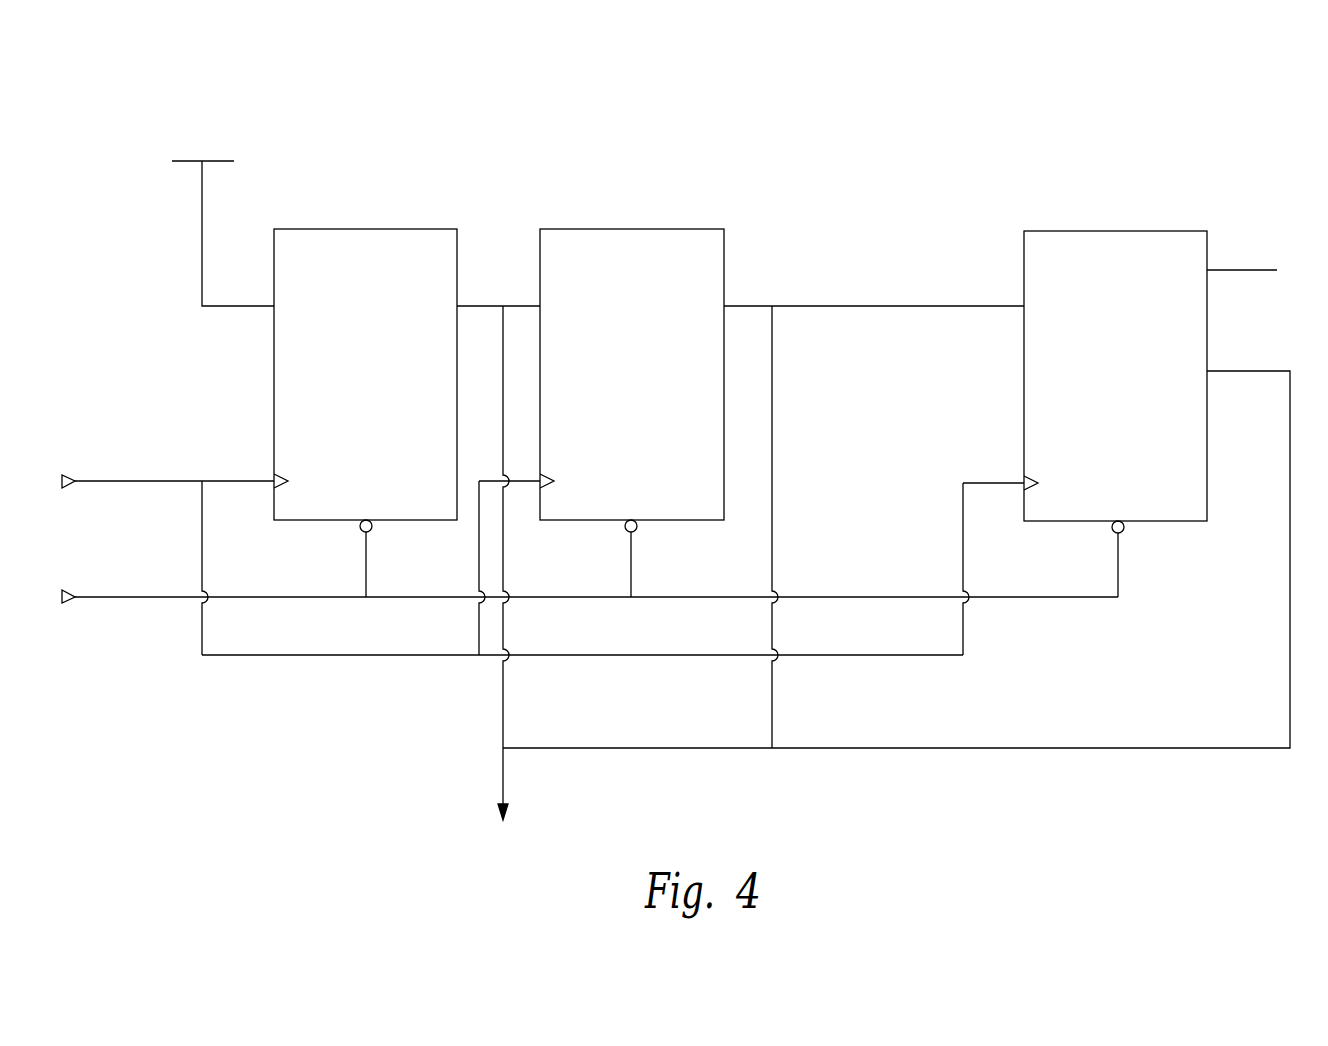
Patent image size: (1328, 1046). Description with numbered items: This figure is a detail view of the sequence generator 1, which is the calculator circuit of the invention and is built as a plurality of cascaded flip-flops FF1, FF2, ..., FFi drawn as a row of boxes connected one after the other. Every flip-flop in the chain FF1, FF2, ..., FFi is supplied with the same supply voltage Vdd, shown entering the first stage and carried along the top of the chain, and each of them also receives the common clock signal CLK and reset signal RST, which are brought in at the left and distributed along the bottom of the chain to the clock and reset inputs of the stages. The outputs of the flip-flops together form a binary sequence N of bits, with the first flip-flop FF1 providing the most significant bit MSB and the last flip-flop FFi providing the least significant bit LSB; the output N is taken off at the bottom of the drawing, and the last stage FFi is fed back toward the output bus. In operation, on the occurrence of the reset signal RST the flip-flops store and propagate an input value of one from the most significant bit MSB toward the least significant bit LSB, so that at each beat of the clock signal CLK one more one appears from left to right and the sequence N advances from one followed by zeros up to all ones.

The sequence generator 1 is at (808, 118).
The flip-flop FF1 is at (365, 374).
The flip-flop FF2 is at (632, 413).
The flip-flop FFi is at (1150, 376).
The most significant bit MSB is at (368, 542).
The least significant bit LSB is at (1117, 544).
The supply voltage Vdd is at (223, 220).
The clock signal CLK is at (543, 553).
The reset signal RST is at (590, 609).
The binary sequence N is at (519, 784).